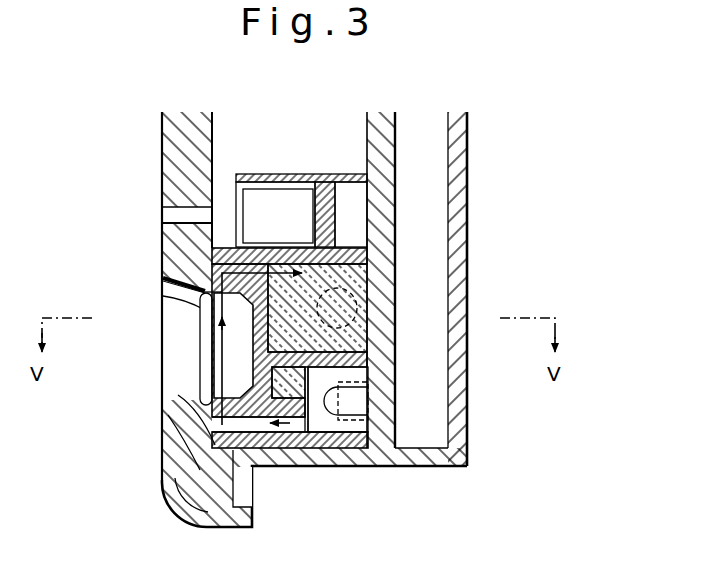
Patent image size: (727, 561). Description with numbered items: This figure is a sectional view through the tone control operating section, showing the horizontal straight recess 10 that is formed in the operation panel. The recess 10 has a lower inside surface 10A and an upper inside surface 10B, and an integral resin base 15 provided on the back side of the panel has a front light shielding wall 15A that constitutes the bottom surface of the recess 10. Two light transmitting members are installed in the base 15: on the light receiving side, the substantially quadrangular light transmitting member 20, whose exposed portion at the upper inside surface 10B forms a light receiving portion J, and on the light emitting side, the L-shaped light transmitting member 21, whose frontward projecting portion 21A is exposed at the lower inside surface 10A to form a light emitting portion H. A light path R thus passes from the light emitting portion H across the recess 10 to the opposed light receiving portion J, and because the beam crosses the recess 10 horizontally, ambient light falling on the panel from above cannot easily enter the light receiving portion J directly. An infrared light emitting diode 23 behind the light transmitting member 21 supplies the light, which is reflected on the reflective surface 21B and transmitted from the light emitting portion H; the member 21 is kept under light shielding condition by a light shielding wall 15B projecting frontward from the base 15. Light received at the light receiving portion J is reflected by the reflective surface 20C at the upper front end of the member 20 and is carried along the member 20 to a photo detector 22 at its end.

The recess 10 is at (178, 378).
The lower inside surface 10A is at (202, 404).
The upper inside surface 10B is at (165, 280).
The base 15 is at (298, 174).
The front light shielding wall 15A is at (255, 350).
The light shielding wall 15B is at (338, 448).
The light transmitting member 20 is at (368, 252).
The reflective surface 20C is at (216, 250).
The light transmitting member 21 is at (322, 433).
The frontward projecting portion 21A is at (270, 452).
The reflective surface 21B is at (177, 477).
The photo detector 22 is at (357, 303).
The infrared light emitting diode 23 is at (333, 400).
The light emitting portion H is at (202, 394).
The light receiving portion J is at (200, 302).
The light path R is at (232, 356).